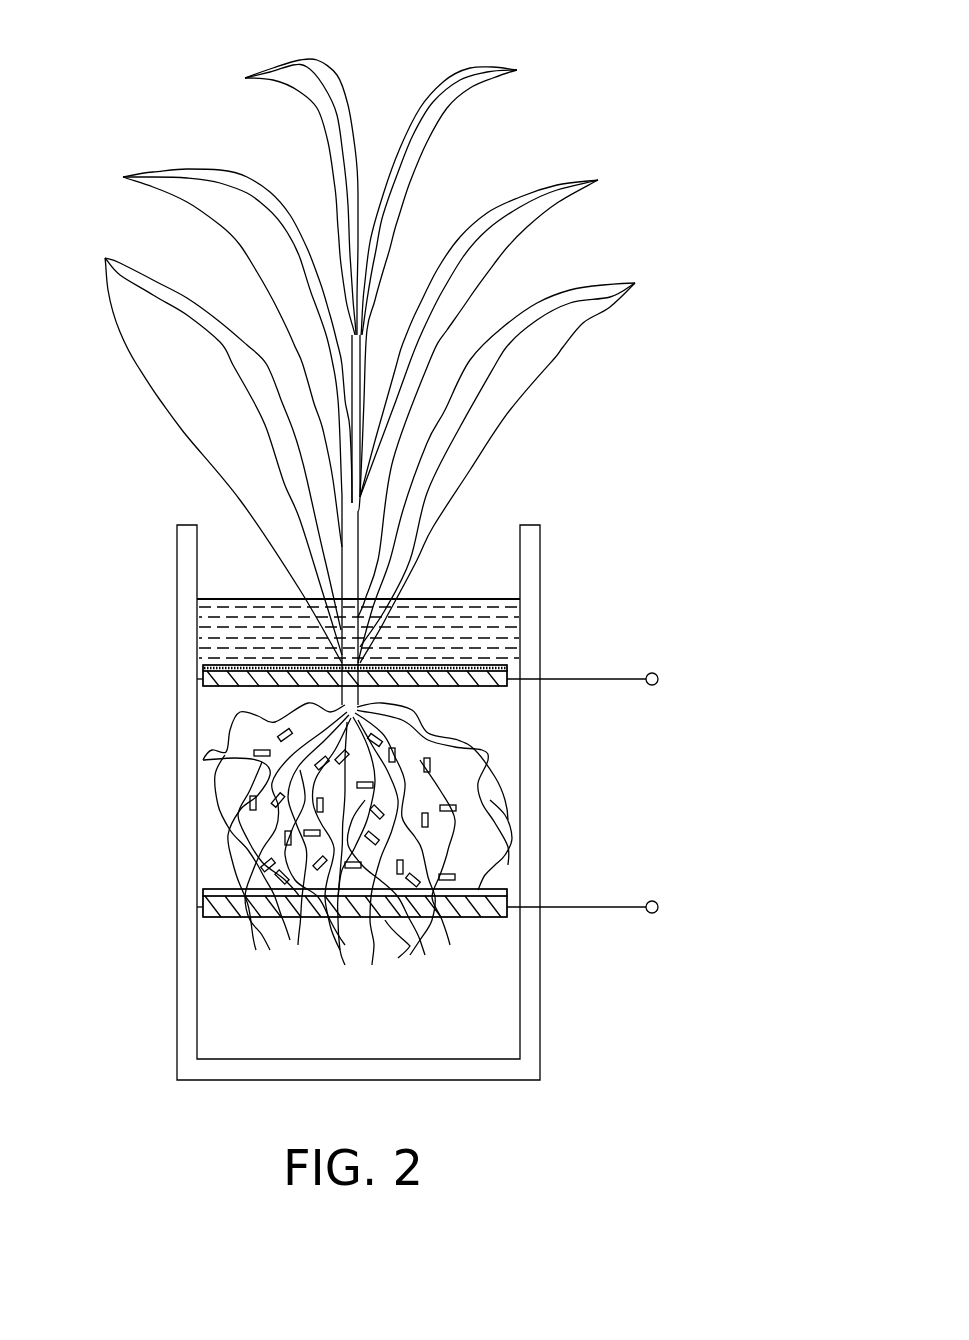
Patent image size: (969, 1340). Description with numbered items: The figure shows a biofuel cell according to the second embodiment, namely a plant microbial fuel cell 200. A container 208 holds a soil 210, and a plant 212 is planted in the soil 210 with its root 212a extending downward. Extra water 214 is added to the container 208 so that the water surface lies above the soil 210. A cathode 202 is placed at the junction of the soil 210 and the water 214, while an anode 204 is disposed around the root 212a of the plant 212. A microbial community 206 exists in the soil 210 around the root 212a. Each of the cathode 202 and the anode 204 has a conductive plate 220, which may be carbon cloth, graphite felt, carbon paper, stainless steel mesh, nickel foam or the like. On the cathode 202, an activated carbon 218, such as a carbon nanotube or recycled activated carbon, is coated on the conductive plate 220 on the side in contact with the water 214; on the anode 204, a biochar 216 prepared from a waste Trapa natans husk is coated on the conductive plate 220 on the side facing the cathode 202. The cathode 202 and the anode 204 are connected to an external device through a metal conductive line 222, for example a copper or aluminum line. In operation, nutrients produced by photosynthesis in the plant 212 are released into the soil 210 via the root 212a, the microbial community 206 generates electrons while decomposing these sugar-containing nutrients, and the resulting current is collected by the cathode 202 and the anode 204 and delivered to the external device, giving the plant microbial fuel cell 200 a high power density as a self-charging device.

The plant microbial fuel cell 200 is at (143, 103).
The cathode 202 is at (82, 640).
The anode 204 is at (82, 868).
The microbial community 206 is at (432, 765).
The container 208 is at (532, 557).
The soil 210 is at (487, 1003).
The plant 212 is at (581, 214).
The root 212a is at (500, 848).
The water 214 is at (495, 632).
The biochar 216 is at (213, 889).
The activated carbon 218 is at (213, 665).
The conductive plate 220 is at (210, 681).
The metal conductive line 222 is at (657, 673).